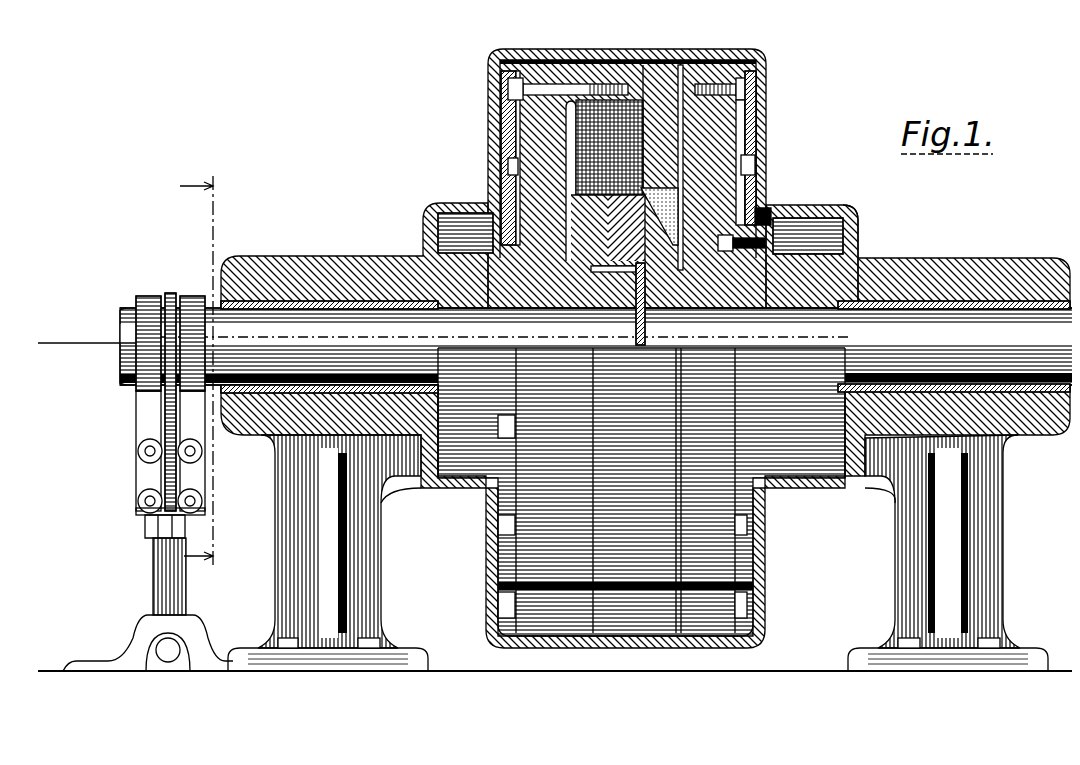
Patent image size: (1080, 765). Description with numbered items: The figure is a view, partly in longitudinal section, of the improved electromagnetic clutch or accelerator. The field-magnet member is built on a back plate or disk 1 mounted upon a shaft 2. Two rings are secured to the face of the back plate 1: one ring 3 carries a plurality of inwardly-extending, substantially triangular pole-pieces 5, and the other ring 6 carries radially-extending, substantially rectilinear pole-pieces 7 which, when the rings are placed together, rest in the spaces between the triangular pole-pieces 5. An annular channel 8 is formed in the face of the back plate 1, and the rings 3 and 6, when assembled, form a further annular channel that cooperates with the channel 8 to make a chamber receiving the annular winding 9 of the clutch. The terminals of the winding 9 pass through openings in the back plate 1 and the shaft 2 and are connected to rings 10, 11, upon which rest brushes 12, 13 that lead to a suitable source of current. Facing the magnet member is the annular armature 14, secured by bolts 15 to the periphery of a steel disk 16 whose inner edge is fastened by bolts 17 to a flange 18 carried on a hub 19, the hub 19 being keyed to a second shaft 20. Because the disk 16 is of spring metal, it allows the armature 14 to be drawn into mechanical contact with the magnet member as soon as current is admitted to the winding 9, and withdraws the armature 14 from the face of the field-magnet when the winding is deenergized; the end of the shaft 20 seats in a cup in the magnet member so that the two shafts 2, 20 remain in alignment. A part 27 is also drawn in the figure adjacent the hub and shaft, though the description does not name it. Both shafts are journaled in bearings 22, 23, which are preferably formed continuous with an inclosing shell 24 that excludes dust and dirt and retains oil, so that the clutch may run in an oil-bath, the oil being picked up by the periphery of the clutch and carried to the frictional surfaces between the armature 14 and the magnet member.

The back plate 1 is at (533, 137).
The shaft 2 is at (288, 313).
The ring 3 is at (658, 68).
The pole-pieces 5 is at (667, 196).
The ring 6 is at (760, 197).
The pole-pieces 7 is at (652, 250).
The annular channel 8 is at (563, 110).
The annular winding 9 is at (582, 92).
The ring 10 is at (180, 292).
The ring 11 is at (142, 290).
The brush 12 is at (183, 348).
The brush 13 is at (127, 342).
The armature 14 is at (748, 114).
The bolts 15 is at (755, 82).
The steel disk 16 is at (742, 100).
The bolts 17 is at (807, 200).
The flange 18 is at (783, 197).
The hub 19 is at (808, 257).
The shaft 20 is at (988, 317).
The bearing 22 is at (1042, 420).
The bearing 23 is at (257, 410).
The inclosing shell 24 is at (483, 542).
The key 27 is at (632, 290).